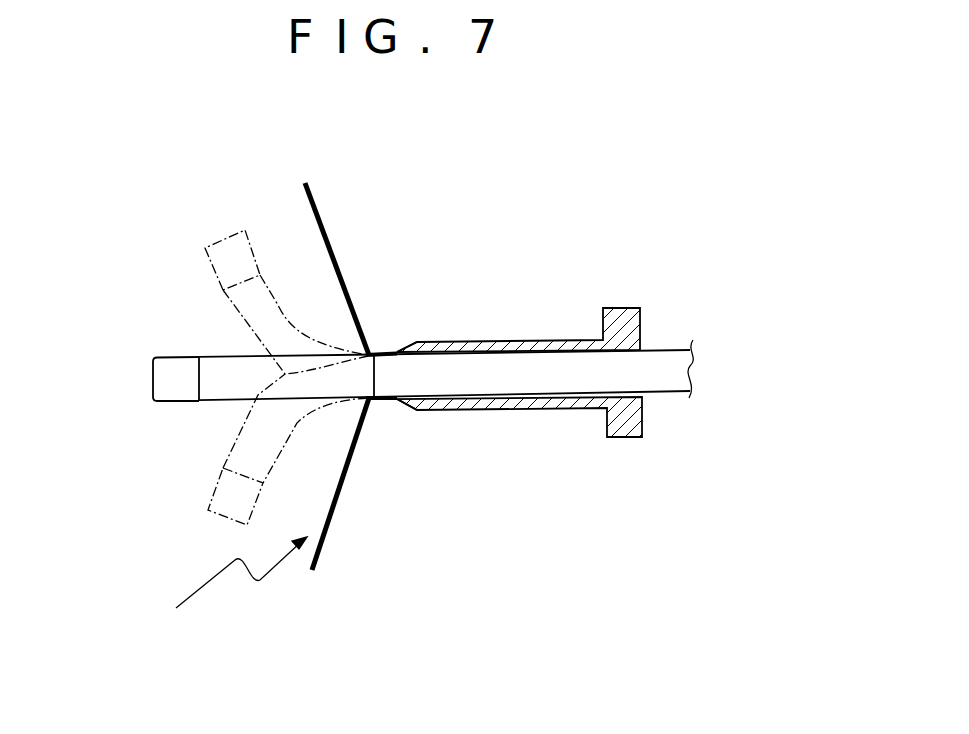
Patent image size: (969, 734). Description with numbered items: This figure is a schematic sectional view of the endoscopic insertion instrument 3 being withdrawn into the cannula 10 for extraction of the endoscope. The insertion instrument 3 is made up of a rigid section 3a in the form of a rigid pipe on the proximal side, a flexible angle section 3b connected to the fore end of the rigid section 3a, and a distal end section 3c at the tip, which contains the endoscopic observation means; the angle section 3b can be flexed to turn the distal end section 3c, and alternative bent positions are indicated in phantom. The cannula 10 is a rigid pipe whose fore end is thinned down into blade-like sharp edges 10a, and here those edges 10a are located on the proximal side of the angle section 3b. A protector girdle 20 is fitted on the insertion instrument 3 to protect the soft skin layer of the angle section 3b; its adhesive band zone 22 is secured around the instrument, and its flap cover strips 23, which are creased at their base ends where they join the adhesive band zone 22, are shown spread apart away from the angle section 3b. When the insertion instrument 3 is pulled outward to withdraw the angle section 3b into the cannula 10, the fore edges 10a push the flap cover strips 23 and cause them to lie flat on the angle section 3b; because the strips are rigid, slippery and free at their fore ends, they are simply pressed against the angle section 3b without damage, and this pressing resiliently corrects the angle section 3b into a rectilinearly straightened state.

The insertion instrument 3 is at (385, 378).
The rigid section 3a is at (647, 372).
The flexible angle section 3b is at (215, 392).
The distal end section 3c is at (182, 368).
The cannula 10 is at (521, 429).
The blade-like sharp edges 10a is at (413, 410).
The protector girdle 20 is at (229, 592).
The adhesive band zone 22 is at (376, 352).
The flap cover strips 23 is at (328, 232).